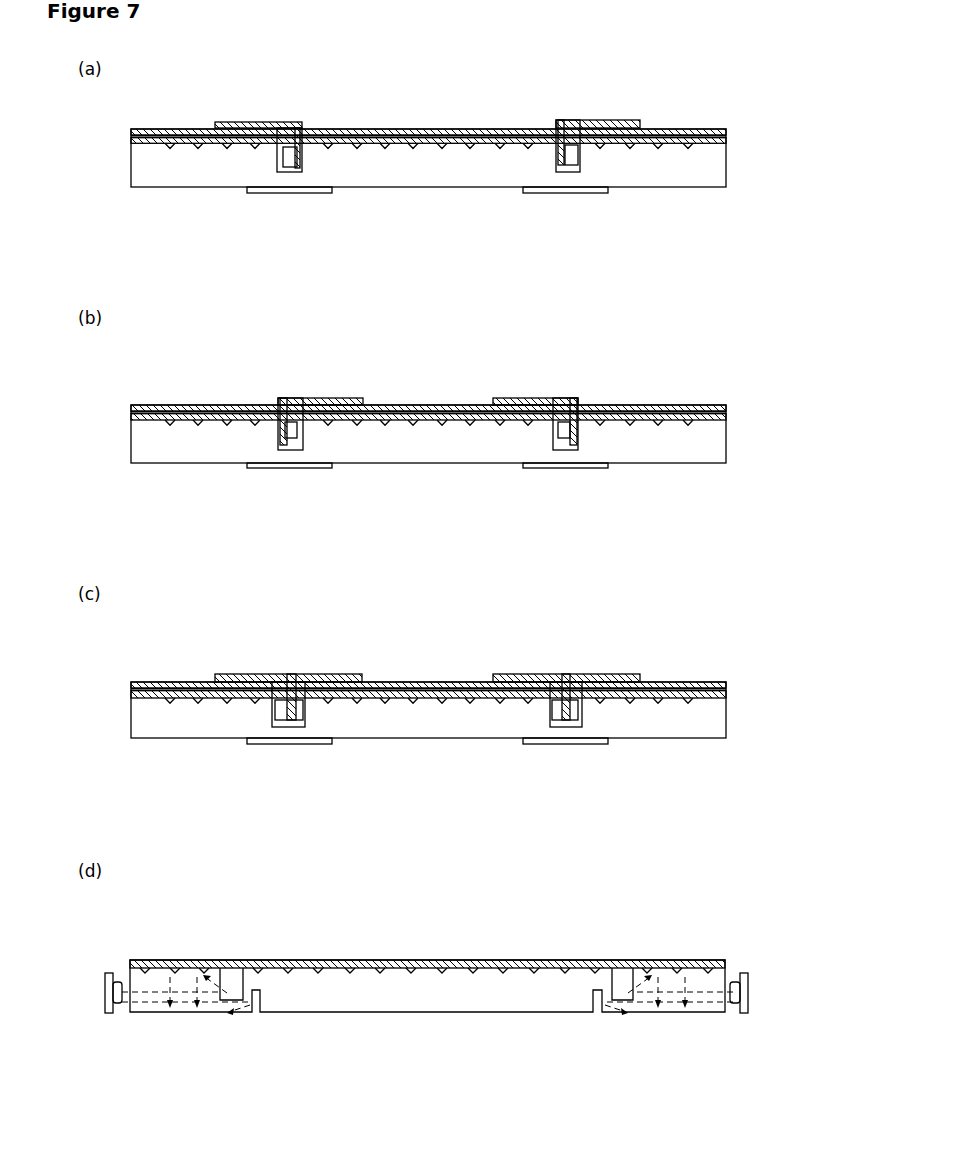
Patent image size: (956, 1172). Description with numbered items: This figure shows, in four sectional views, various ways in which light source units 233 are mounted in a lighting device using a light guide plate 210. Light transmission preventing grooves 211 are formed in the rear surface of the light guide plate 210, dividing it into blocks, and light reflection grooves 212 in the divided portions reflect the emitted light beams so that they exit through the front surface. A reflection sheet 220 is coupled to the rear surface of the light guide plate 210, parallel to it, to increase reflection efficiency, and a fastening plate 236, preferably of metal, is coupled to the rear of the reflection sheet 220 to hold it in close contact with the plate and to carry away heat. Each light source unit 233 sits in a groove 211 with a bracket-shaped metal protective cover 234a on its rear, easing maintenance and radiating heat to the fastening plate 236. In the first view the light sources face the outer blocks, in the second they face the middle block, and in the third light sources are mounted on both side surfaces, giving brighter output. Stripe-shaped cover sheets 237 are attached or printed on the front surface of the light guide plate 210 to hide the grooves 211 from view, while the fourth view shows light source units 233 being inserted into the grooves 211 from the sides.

The light guide plate 210 is at (683, 180).
The light transmission preventing groove 211 is at (289, 170).
The light reflection groove 212 is at (443, 146).
The reflection sheet 220 is at (688, 131).
The light source unit 233 is at (284, 158).
The protective cover 234a is at (264, 124).
The fastening plate 236 is at (431, 131).
The cover sheet 237 is at (320, 192).